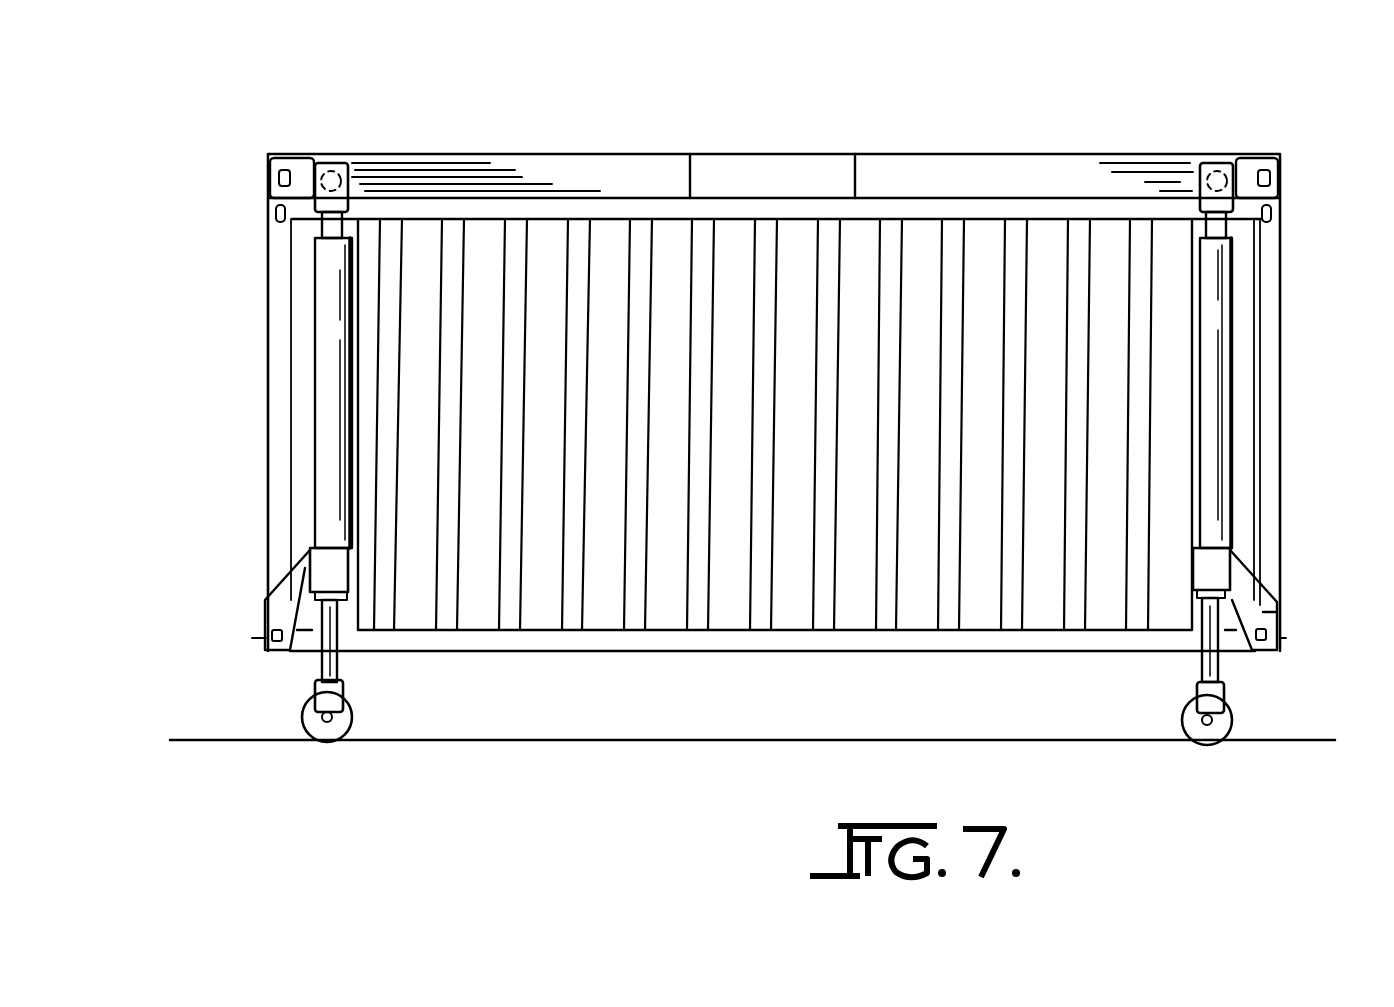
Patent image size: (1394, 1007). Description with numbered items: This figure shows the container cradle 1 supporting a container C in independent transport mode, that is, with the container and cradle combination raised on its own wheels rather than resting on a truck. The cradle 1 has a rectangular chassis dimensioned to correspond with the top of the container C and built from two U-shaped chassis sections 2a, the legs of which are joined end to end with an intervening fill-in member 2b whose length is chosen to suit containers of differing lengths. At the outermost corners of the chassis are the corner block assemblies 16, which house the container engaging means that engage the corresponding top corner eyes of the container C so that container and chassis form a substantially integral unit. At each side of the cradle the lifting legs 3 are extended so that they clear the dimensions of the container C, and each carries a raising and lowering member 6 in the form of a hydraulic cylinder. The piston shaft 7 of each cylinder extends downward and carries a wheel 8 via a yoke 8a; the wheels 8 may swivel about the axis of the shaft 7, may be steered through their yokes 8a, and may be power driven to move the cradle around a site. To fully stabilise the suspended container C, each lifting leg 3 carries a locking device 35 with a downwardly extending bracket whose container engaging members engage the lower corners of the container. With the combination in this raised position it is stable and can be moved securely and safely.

The cradle 1 is at (820, 137).
The U-shaped chassis section 2a is at (447, 178).
The fill-in member 2b is at (763, 160).
The lifting leg 3 is at (313, 392).
The raising and lowering member 6 is at (326, 296).
The piston shaft 7 is at (347, 652).
The wheel 8 is at (352, 700).
The yoke 8a is at (1207, 693).
The corner block assembly 16 is at (283, 165).
The locking device 35 is at (293, 598).
The container C is at (913, 520).